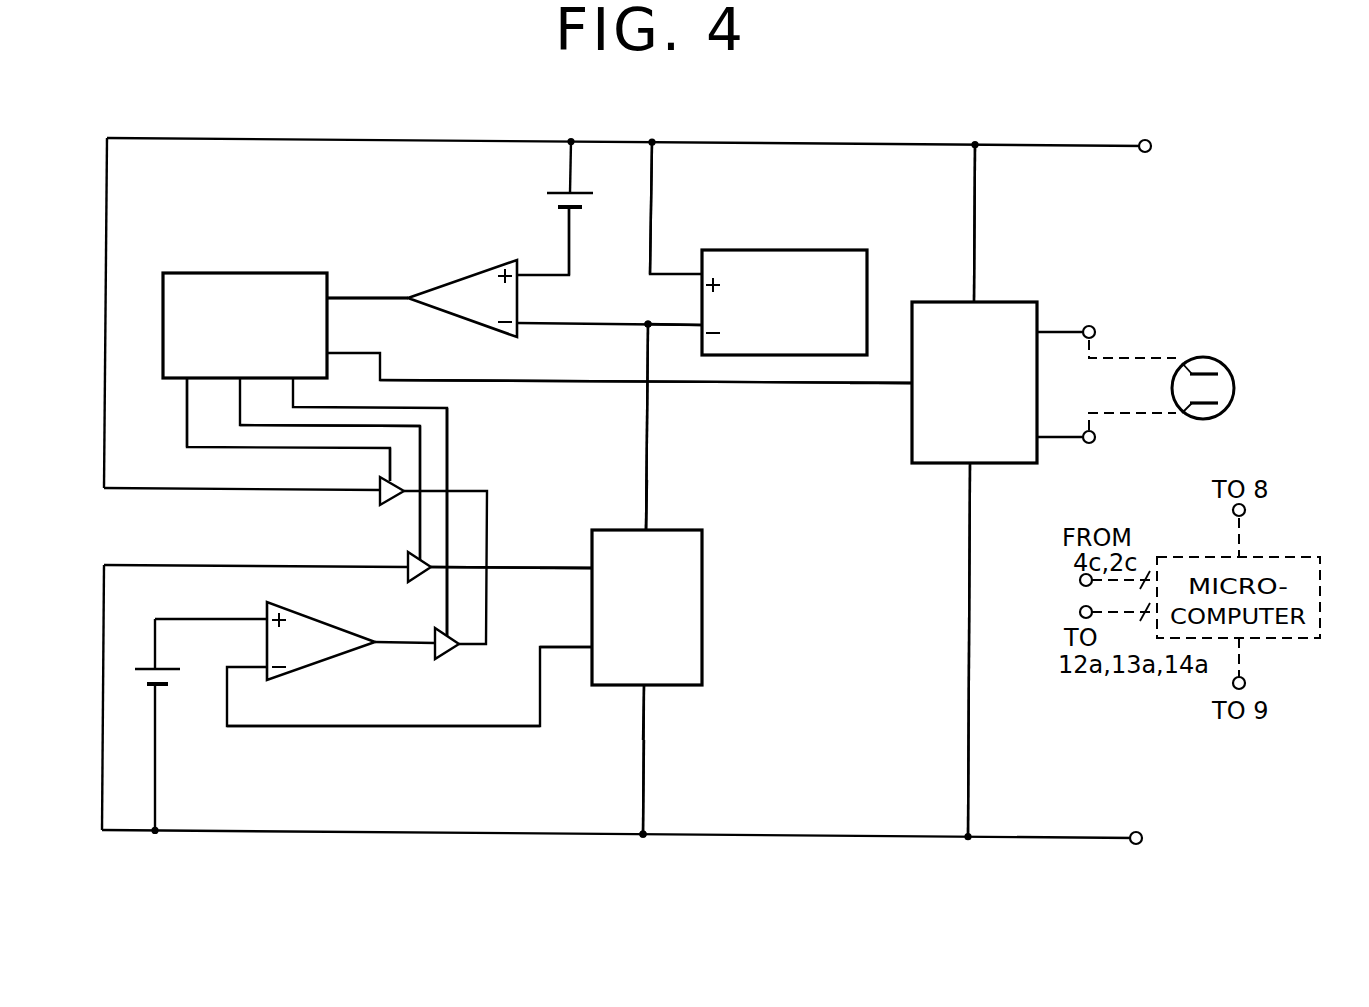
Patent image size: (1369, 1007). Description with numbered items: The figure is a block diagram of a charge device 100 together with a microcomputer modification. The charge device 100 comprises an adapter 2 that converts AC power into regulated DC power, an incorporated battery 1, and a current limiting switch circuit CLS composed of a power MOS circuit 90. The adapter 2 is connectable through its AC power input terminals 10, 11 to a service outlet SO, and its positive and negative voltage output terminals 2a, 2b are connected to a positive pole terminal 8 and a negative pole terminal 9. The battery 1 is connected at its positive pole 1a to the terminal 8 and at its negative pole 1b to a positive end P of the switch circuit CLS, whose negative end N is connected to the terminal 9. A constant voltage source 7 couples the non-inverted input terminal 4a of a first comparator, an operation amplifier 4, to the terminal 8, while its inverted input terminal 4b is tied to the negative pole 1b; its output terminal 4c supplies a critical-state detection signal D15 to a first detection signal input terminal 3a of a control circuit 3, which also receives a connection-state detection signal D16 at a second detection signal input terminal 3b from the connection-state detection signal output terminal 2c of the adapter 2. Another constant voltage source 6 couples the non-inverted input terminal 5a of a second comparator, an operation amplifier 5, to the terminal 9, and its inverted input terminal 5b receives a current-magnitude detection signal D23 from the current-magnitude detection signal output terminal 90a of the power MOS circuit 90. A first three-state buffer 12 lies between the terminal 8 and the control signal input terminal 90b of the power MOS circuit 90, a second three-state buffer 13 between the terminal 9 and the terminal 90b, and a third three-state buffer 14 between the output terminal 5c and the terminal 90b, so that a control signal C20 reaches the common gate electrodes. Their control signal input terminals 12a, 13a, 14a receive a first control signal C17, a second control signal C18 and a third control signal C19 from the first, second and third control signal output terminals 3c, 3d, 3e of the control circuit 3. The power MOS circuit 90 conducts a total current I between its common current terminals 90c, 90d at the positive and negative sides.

The charge device 100 is at (1071, 146).
The positive pole terminal 8 is at (1144, 153).
The negative pole terminal 9 is at (1134, 831).
The battery 1 is at (786, 250).
The positive pole 1a is at (700, 272).
The negative pole 1b is at (700, 323).
The adapter 2 is at (1020, 465).
The positive voltage output terminal 2a is at (970, 300).
The negative voltage output terminal 2b is at (962, 468).
The connection-state detection signal output terminal 2c is at (908, 388).
The control circuit 3 is at (244, 273).
The first detection signal input terminal 3a is at (330, 300).
The second detection signal input terminal 3b is at (330, 352).
The first control signal output terminal 3c is at (190, 380).
The second control signal output terminal 3d is at (242, 380).
The third control signal output terminal 3e is at (296, 380).
The operation amplifier 4 is at (455, 285).
The non-inverted input terminal 4a is at (521, 273).
The inverted input terminal 4b is at (520, 322).
The output terminal 4c is at (408, 296).
The operation amplifier 5 is at (327, 662).
The non-inverted input terminal 5a is at (266, 618).
The inverted input terminal 5b is at (266, 666).
The output terminal 5c is at (373, 645).
The constant voltage source 6 is at (160, 686).
The constant voltage source 7 is at (546, 196).
The AC power input terminal 10 is at (1089, 326).
The AC power input terminal 11 is at (1085, 432).
The first three-state buffer 12 is at (378, 499).
The control signal input terminal 12a is at (388, 480).
The second three-state buffer 13 is at (405, 565).
The control signal input terminal 13a is at (418, 556).
The third three-state buffer 14 is at (456, 650).
The control signal input terminal 14a is at (446, 631).
The power MOS circuit 90 is at (704, 621).
The current-magnitude detection signal output terminal 90a is at (590, 650).
The control signal input terminal 90b is at (590, 578).
The common current terminal 90c is at (648, 528).
The common current terminal 90d is at (647, 690).
The critical-state detection signal D15 is at (349, 296).
The connection-state detection signal D16 is at (817, 385).
The current-magnitude detection signal D23 is at (503, 728).
The first control signal C17 is at (186, 405).
The second control signal C18 is at (298, 428).
The third control signal C19 is at (449, 442).
The control signal C20 is at (528, 566).
The positive end P is at (644, 332).
The negative end N is at (645, 840).
The total conducted current I is at (646, 800).
The service outlet SO is at (1228, 362).
The current limiting switch circuit CLS is at (645, 439).